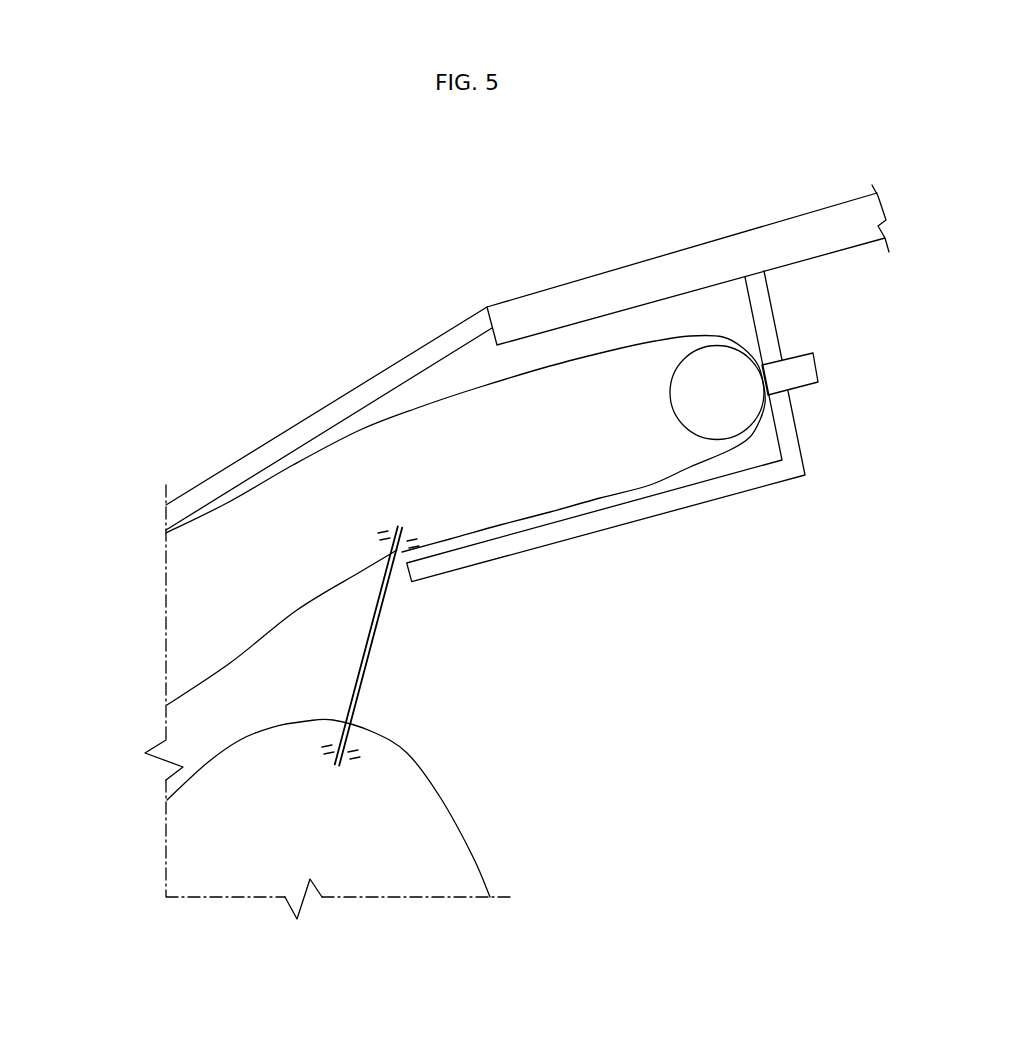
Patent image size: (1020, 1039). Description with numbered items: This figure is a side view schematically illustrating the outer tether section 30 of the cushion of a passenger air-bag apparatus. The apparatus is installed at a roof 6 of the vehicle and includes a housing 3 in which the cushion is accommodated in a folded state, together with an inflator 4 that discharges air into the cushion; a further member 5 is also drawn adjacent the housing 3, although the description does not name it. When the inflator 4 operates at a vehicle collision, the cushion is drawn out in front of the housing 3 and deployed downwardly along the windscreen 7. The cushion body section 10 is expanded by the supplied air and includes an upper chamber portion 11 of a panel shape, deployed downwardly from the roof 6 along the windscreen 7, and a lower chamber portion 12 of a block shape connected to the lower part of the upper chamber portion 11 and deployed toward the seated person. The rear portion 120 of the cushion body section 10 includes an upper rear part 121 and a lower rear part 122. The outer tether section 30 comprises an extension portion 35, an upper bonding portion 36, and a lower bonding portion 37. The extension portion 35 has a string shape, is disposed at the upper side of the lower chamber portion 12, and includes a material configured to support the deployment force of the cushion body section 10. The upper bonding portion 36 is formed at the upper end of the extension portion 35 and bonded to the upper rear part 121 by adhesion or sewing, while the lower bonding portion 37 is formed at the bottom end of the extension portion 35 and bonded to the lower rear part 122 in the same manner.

The housing 3 is at (478, 555).
The inflator 4 is at (710, 370).
The fastening member 5 is at (807, 370).
The roof 6 is at (592, 293).
The windscreen 7 is at (427, 350).
The cushion body section 10 is at (96, 599).
The upper chamber portion 11 is at (207, 632).
The lower chamber portion 12 is at (249, 826).
The outer tether section 30 is at (508, 628).
The extension portion 35 is at (368, 651).
The upper bonding portion 36 is at (395, 572).
The lower bonding portion 37 is at (350, 742).
The rear portion 120 is at (260, 357).
The upper rear part 121 is at (307, 600).
The lower rear part 122 is at (283, 728).